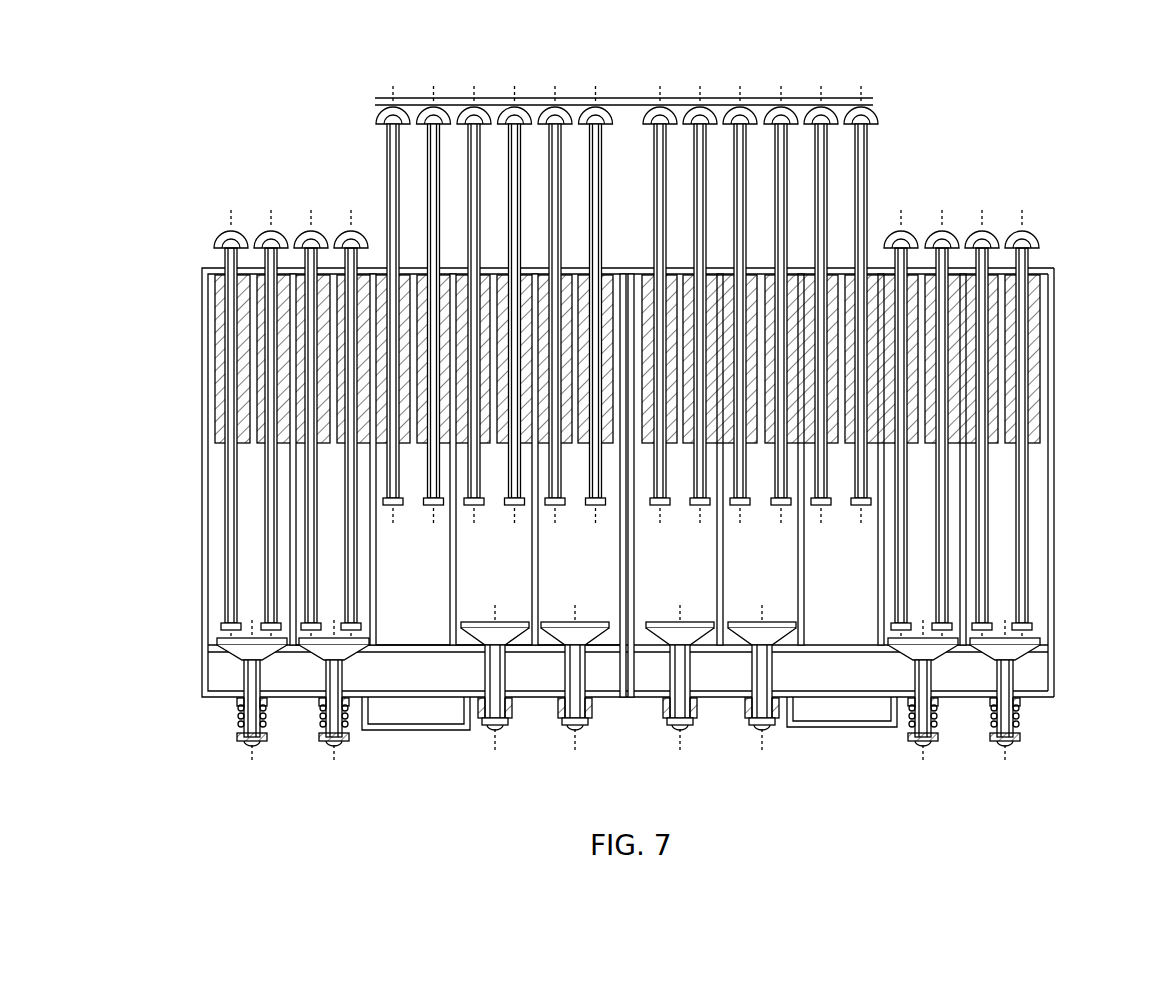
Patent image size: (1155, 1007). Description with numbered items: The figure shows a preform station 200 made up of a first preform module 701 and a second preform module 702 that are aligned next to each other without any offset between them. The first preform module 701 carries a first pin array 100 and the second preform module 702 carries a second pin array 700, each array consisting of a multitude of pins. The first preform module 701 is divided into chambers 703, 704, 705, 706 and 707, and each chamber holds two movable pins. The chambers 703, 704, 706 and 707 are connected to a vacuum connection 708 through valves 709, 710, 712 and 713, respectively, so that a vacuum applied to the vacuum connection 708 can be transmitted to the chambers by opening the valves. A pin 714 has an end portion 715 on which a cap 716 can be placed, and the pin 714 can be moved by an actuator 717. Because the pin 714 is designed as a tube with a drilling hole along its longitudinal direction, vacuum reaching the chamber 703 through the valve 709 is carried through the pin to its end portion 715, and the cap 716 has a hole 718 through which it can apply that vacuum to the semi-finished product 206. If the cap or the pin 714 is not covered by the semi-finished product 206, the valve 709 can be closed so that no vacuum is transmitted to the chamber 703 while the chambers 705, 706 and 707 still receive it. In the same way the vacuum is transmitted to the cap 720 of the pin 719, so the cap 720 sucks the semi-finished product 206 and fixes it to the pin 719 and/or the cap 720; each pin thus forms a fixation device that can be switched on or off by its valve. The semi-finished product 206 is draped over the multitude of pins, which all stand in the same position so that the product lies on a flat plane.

The first pin array 100 is at (581, 278).
The preform station 200 is at (633, 416).
The semi-finished product 206 is at (415, 97).
The second pin array 700 is at (617, 278).
The first preform module 701 is at (200, 312).
The second preform module 702 is at (1058, 610).
The chamber 703 is at (216, 612).
The chamber 704 is at (325, 532).
The chamber 705 is at (408, 620).
The chamber 706 is at (522, 600).
The chamber 707 is at (604, 600).
The vacuum connection 708 is at (407, 715).
The valve 709 is at (253, 673).
The valve 710 is at (333, 677).
The valve 712 is at (515, 702).
The valve 713 is at (577, 673).
The pin 714 is at (225, 503).
The end portion 715 is at (212, 246).
The cap 716 is at (222, 232).
The actuator 717 is at (212, 372).
The hole 718 is at (233, 230).
The pin 719 is at (383, 143).
The cap 720 is at (388, 97).